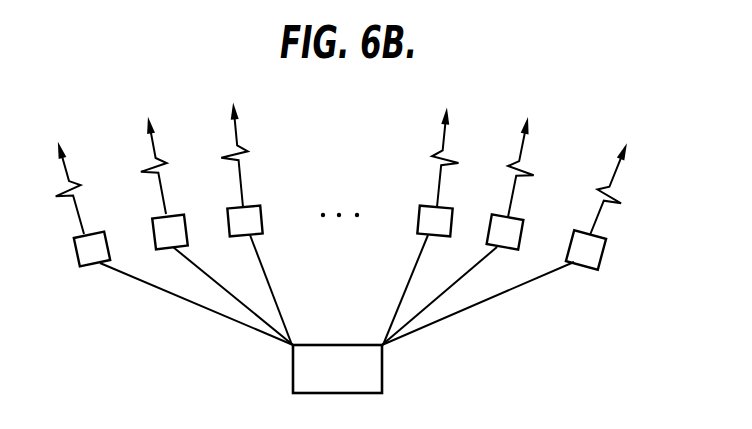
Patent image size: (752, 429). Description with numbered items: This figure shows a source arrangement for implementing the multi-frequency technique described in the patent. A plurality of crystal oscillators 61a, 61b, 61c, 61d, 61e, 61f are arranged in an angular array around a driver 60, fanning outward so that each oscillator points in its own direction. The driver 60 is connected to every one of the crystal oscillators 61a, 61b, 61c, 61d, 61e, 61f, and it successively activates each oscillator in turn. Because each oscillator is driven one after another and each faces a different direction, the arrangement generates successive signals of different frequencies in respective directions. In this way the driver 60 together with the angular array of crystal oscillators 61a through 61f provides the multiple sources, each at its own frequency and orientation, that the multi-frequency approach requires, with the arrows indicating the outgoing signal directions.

The driver 60 is at (383, 376).
The crystal oscillator 61a is at (77, 264).
The crystal oscillator 61b is at (153, 243).
The crystal oscillator 61c is at (262, 223).
The crystal oscillator 61d is at (418, 222).
The crystal oscillator 61e is at (513, 238).
The crystal oscillator 61f is at (600, 258).